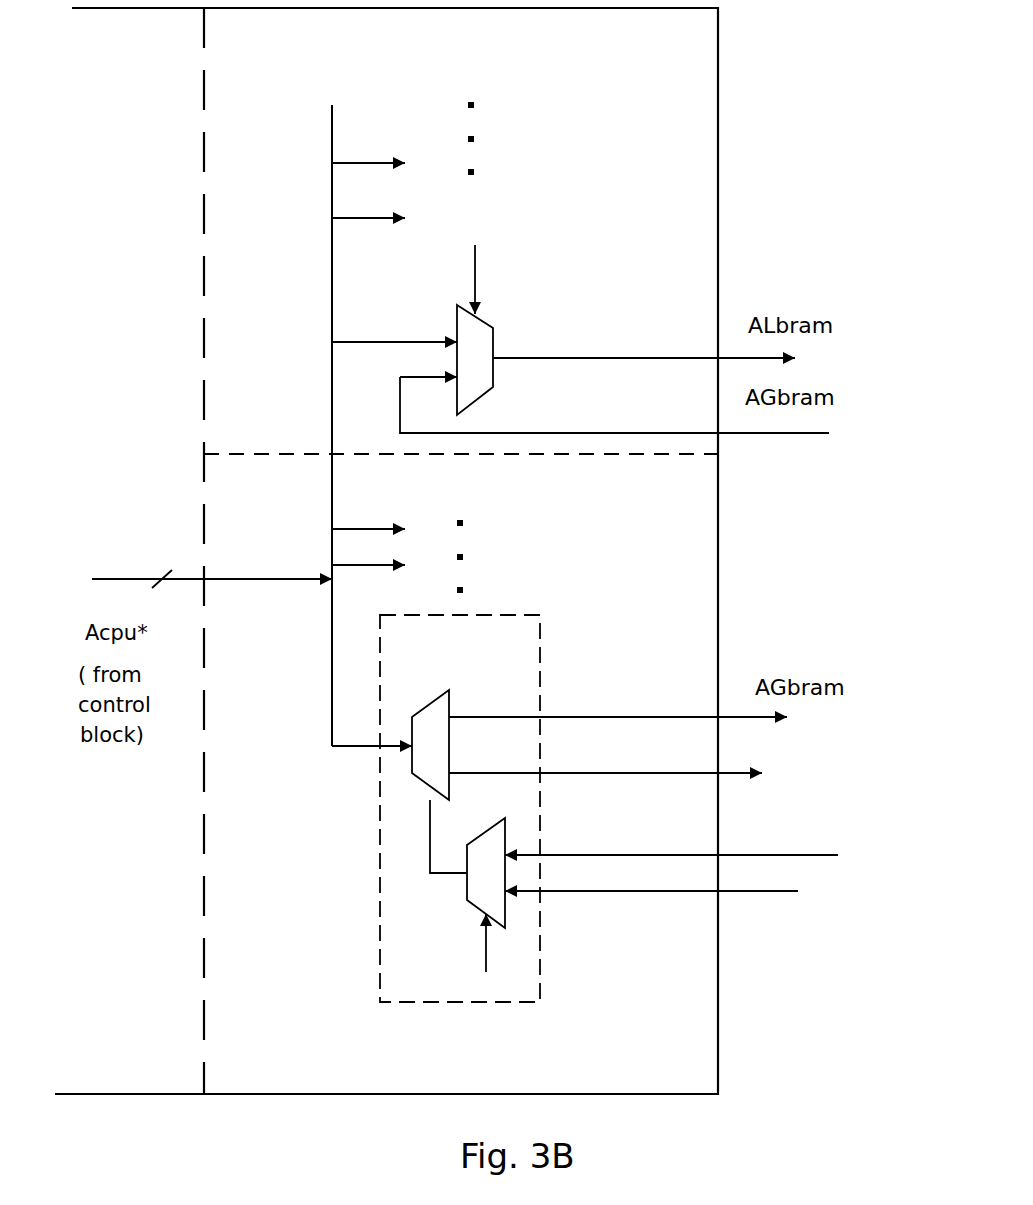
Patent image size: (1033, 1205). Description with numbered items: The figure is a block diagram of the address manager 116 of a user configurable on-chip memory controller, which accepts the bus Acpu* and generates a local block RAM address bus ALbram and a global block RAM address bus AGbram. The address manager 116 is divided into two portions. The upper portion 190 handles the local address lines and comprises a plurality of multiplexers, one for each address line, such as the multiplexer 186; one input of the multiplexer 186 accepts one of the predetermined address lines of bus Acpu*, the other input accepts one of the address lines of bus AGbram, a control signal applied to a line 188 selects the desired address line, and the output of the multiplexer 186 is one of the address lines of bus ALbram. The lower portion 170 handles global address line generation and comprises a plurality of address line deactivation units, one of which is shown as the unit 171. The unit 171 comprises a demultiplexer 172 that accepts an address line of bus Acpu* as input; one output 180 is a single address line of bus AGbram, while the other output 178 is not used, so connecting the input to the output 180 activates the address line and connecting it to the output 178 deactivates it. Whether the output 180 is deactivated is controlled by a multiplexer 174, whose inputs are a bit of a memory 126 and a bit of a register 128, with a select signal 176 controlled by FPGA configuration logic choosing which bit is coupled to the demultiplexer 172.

The address manager 116 is at (632, 120).
The portion of address manager handling local address lines 190 is at (261, 57).
The portion of address manager handling global address line generation 170 is at (289, 1075).
The multiplexer 186 is at (457, 320).
The line 188 is at (475, 265).
The address line deactivation unit 171 is at (432, 1002).
The demultiplexer 172 is at (428, 708).
The output 180 is at (470, 717).
The output 178 is at (472, 773).
The multiplexer 174 is at (466, 898).
The select signal 176 is at (486, 945).
The memory 126 is at (770, 855).
The register 128 is at (733, 891).